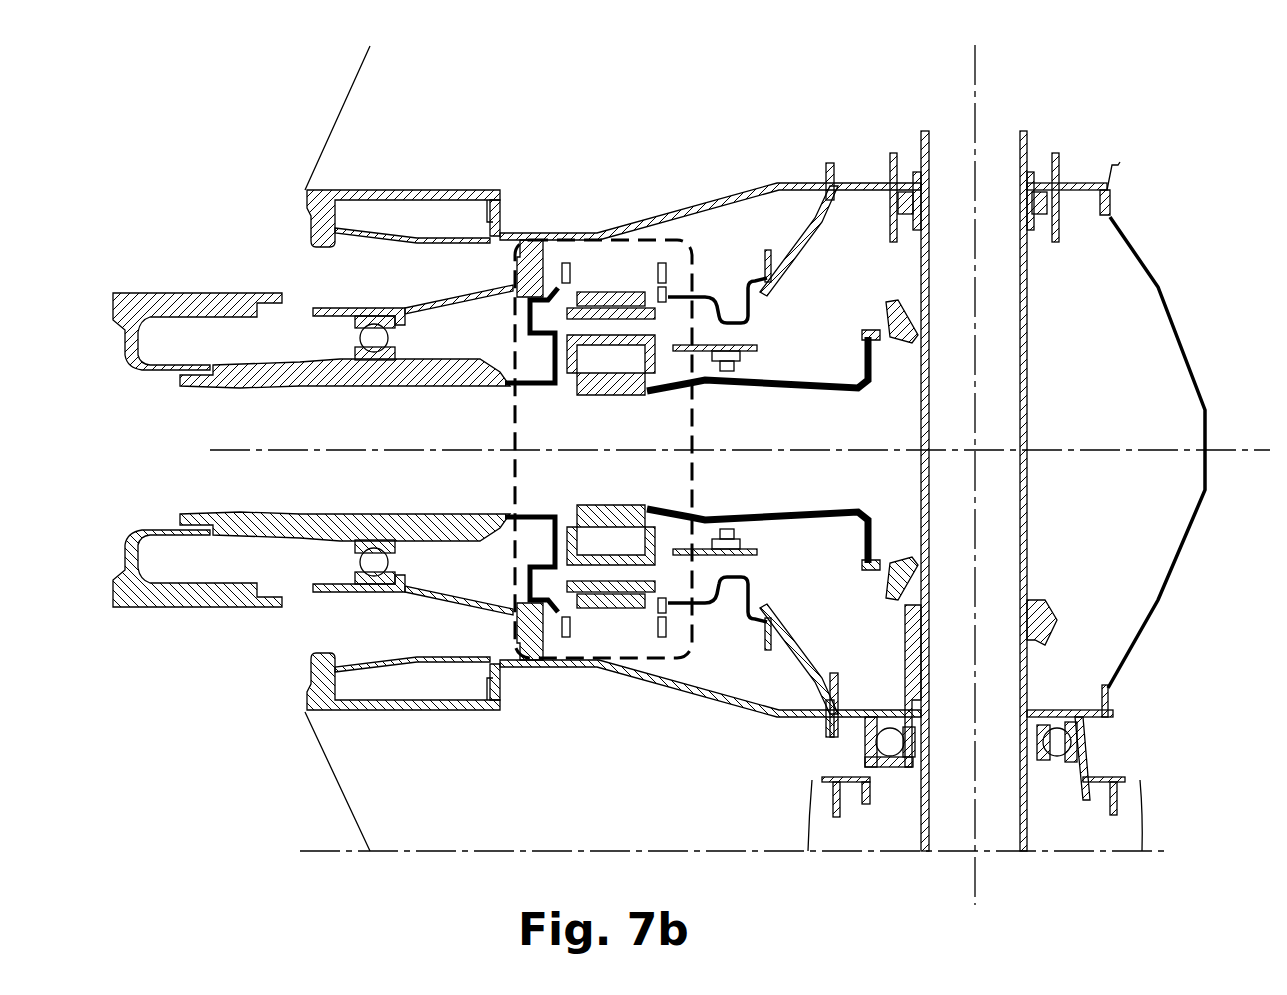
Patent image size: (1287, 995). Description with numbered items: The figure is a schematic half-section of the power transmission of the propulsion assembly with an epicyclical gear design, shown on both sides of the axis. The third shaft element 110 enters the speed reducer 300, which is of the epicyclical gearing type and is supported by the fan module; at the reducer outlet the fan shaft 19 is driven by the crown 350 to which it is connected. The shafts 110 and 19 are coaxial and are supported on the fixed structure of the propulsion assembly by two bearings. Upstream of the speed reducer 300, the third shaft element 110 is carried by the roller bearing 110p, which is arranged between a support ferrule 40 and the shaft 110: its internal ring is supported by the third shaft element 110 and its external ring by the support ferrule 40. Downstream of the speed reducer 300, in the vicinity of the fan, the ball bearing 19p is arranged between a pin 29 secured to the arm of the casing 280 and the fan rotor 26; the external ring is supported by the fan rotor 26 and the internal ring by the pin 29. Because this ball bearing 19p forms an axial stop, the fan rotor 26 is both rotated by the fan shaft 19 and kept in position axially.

The fan shaft 19 is at (249, 377).
The ball bearing 19p is at (398, 343).
The crown 350 is at (620, 292).
The speed reducer 300 is at (695, 248).
The support ferrule 40 is at (733, 313).
The roller bearing 110p is at (760, 350).
The third shaft element 110 is at (720, 504).
The fan rotor 26 is at (177, 619).
The casing 280 is at (369, 716).
The pin 29 is at (440, 665).